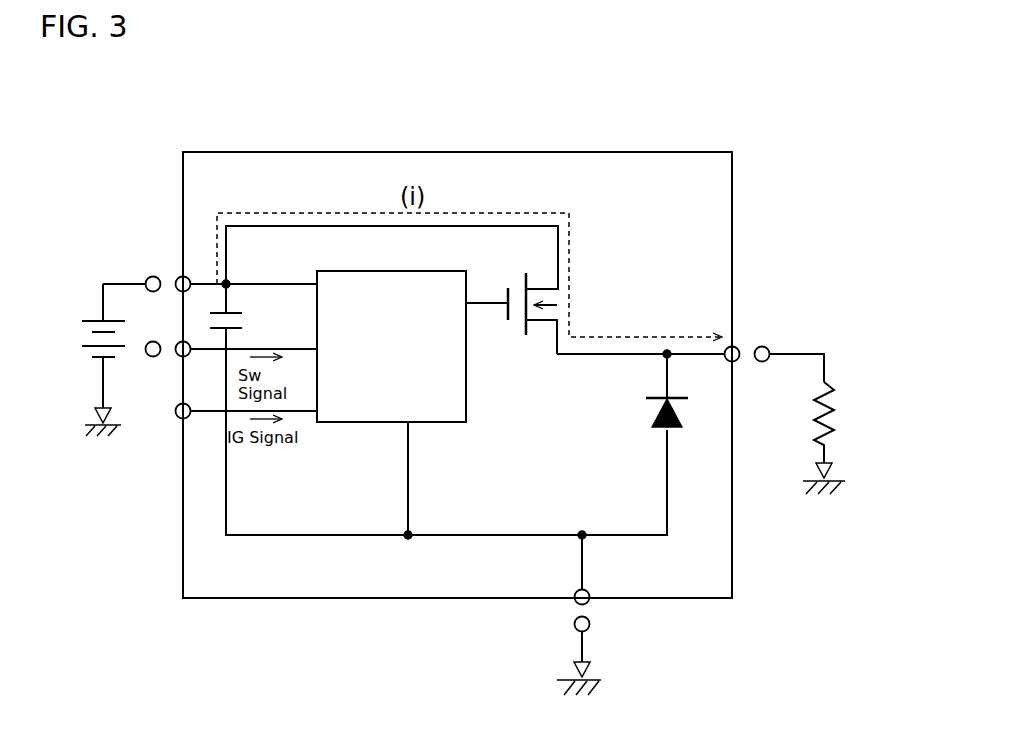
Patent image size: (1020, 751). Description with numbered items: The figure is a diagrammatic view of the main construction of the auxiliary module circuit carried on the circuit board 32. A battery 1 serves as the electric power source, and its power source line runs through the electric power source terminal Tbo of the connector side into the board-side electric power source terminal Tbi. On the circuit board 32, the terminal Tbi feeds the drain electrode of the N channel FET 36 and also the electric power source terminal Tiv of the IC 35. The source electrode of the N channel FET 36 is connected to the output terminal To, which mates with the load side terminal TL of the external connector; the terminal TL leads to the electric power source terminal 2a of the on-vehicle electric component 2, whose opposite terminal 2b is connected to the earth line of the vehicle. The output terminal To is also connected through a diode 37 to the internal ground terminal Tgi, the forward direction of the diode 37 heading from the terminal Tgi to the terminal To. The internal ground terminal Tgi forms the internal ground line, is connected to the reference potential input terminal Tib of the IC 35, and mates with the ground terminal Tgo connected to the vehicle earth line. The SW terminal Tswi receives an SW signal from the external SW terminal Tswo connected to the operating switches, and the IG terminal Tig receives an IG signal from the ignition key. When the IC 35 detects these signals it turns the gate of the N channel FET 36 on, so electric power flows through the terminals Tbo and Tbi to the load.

The battery 1 is at (83, 321).
The on-vehicle electric component 2 is at (836, 410).
The electric power source terminal 2a is at (826, 364).
The terminal 2b is at (830, 456).
The circuit board 32 is at (556, 152).
The IC 35 is at (468, 400).
The N channel FET 36 is at (583, 277).
The diode 37 is at (642, 434).
The electric power source terminal Tbi is at (180, 278).
The electric power source terminal Tbo is at (151, 292).
The SW terminal Tswo is at (149, 357).
The SW terminal Tswi is at (178, 358).
The IG terminal Tig is at (179, 418).
The electric power source terminal Tiv is at (316, 284).
The reference potential input terminal Tib is at (410, 424).
The output terminal To is at (737, 347).
The load side terminal TL is at (768, 347).
The ground terminal Tgo is at (572, 624).
The internal ground terminal Tgi is at (589, 603).